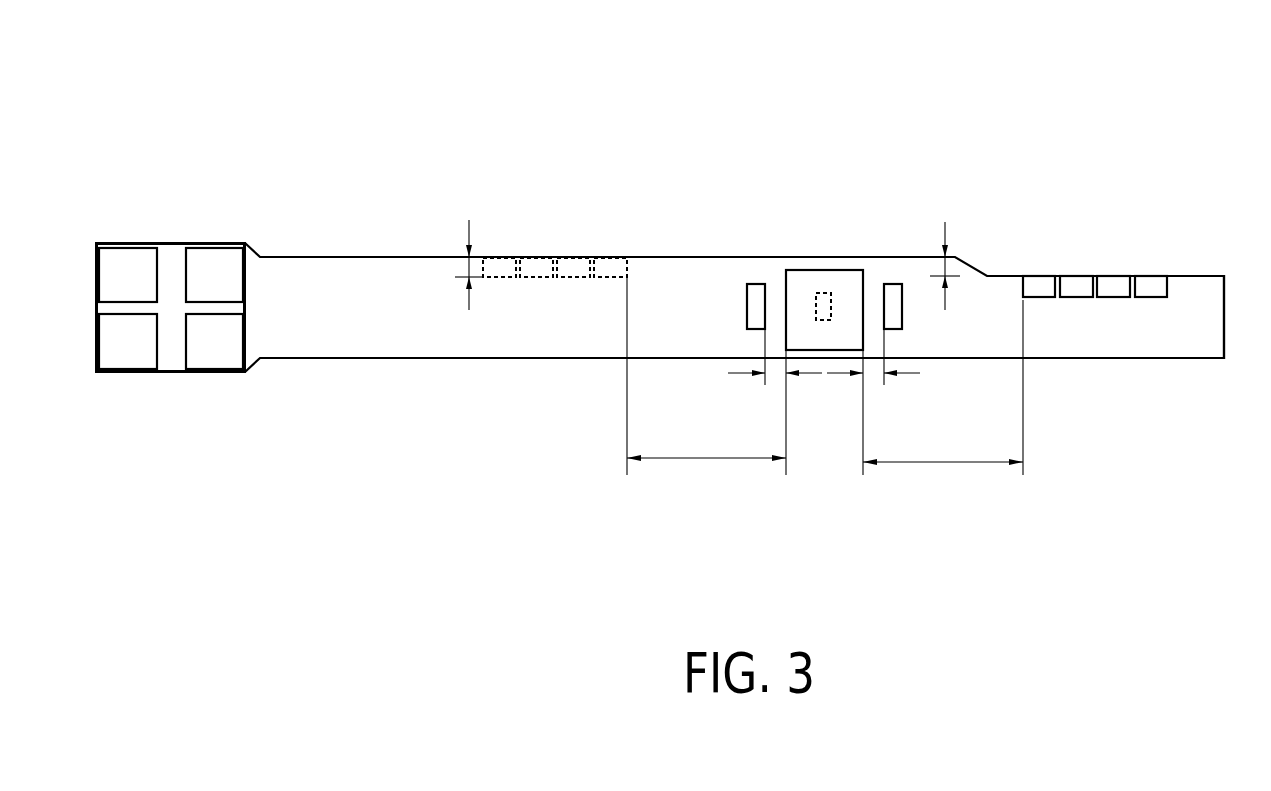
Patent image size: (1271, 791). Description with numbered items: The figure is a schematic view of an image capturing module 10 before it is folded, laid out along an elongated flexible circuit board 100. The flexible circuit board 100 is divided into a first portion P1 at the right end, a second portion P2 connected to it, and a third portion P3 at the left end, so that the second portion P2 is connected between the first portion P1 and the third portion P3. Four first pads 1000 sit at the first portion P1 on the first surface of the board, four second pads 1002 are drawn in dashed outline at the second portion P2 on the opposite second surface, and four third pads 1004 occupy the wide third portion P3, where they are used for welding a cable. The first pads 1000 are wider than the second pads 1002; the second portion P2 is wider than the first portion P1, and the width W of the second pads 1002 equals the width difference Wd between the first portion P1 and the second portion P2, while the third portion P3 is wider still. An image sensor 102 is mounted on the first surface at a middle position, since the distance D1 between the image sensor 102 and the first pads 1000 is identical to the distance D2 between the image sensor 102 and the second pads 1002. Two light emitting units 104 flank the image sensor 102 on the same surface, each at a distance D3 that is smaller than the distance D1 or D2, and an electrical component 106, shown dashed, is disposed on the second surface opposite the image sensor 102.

The image capturing module 10 is at (303, 86).
The flexible circuit board 100 is at (528, 342).
The image sensor 102 is at (820, 270).
The light emitting unit 104 is at (757, 284).
The electrical component 106 is at (826, 293).
The first pads 1000 is at (1045, 283).
The second pads 1002 is at (500, 265).
The third pads 1004 is at (213, 350).
The first portion P1 is at (1197, 273).
The second portion P2 is at (653, 255).
The third portion P3 is at (174, 243).
The width of the second pads W is at (469, 265).
The width difference Wd is at (956, 270).
The distance between the image sensor and the first pads D1 is at (943, 387).
The distance between the image sensor and the second pads D2 is at (706, 376).
The distance between the image sensor and each light emitting unit D3 is at (778, 376).